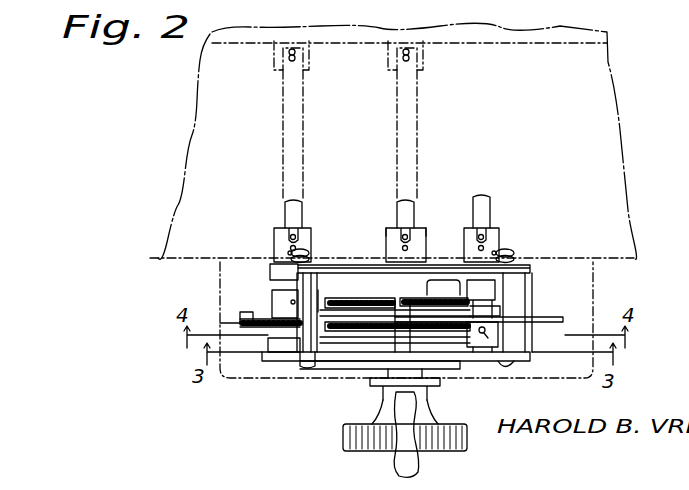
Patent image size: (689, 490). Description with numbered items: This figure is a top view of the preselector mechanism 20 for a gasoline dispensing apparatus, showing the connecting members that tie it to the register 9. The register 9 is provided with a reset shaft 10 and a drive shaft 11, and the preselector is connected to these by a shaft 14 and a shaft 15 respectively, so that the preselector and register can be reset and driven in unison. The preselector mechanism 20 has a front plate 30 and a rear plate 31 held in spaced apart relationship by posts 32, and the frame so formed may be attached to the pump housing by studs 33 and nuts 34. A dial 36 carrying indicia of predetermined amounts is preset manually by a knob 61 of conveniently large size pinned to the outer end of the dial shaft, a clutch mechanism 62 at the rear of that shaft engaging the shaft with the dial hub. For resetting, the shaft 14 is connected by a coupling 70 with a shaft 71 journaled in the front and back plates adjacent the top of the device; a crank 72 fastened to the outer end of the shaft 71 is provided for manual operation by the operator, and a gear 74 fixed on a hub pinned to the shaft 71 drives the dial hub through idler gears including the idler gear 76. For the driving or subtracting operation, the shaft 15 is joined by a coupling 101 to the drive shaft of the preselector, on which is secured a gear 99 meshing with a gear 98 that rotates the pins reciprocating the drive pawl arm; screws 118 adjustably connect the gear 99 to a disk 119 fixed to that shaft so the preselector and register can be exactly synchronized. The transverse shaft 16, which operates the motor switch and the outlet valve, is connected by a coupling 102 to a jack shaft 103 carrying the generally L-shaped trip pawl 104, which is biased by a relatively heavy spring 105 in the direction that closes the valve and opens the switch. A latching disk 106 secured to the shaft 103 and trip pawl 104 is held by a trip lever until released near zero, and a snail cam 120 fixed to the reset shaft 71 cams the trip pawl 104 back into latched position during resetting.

The register 9 is at (564, 45).
The reset shaft 10 is at (386, 60).
The drive shaft 11 is at (270, 55).
The shaft 14 is at (398, 205).
The shaft 15 is at (288, 203).
The shaft 16 is at (483, 198).
The preselector mechanism 20 is at (282, 364).
The front plate 30 is at (294, 362).
The rear plate 31 is at (522, 268).
The posts 32 is at (300, 350).
The studs 33 is at (304, 251).
The nuts 34 is at (310, 259).
The dial 36 is at (338, 352).
The knob 61 is at (343, 436).
The clutch mechanism 62 is at (426, 226).
The coupling 70 is at (388, 233).
The shaft 71 is at (395, 350).
The crank 72 is at (397, 462).
The gear 74 is at (364, 300).
The idler gear 76 is at (328, 301).
The gear 98 is at (370, 323).
The gear 99 is at (240, 323).
The coupling 101 is at (276, 230).
The coupling 102 is at (466, 238).
The jack shaft 103 is at (490, 300).
The trip pawl 104 is at (530, 310).
The spring 105 is at (563, 320).
The latching disk 106 is at (500, 340).
The screws 118 is at (274, 308).
The disk 119 is at (250, 318).
The snail cam 120 is at (434, 293).